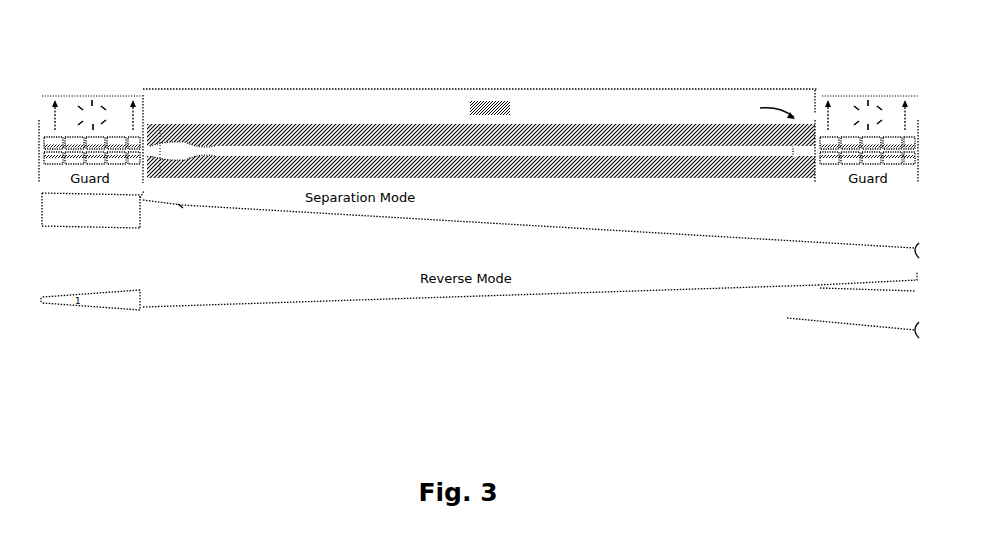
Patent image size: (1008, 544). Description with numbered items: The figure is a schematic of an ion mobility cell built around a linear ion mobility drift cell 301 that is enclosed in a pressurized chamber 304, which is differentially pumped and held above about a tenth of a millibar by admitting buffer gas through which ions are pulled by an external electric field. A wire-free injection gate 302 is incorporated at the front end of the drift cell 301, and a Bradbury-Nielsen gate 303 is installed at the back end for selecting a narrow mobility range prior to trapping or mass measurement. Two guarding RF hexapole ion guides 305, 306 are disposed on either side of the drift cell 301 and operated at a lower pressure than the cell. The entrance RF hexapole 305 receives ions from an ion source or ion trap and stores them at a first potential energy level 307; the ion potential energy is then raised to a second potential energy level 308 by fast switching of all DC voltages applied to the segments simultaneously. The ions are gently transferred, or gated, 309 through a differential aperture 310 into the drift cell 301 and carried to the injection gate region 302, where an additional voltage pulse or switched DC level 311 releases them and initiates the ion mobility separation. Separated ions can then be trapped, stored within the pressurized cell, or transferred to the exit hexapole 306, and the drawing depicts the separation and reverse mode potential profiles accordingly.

The linear ion mobility drift cell 301 is at (347, 118).
The wire-free injection gate 302 is at (178, 120).
The Bradbury-Nielsen gate 303 is at (745, 97).
The pressurized chamber 304 is at (652, 86).
The entrance RF hexapole 305 is at (86, 93).
The exit RF hexapole 306 is at (865, 93).
The first potential energy level 307 is at (53, 237).
The second potential energy level 308 is at (53, 200).
The ion transfer (gating) 309 is at (144, 200).
The differential aperture 310 is at (144, 118).
The switched DC level 311 is at (182, 205).